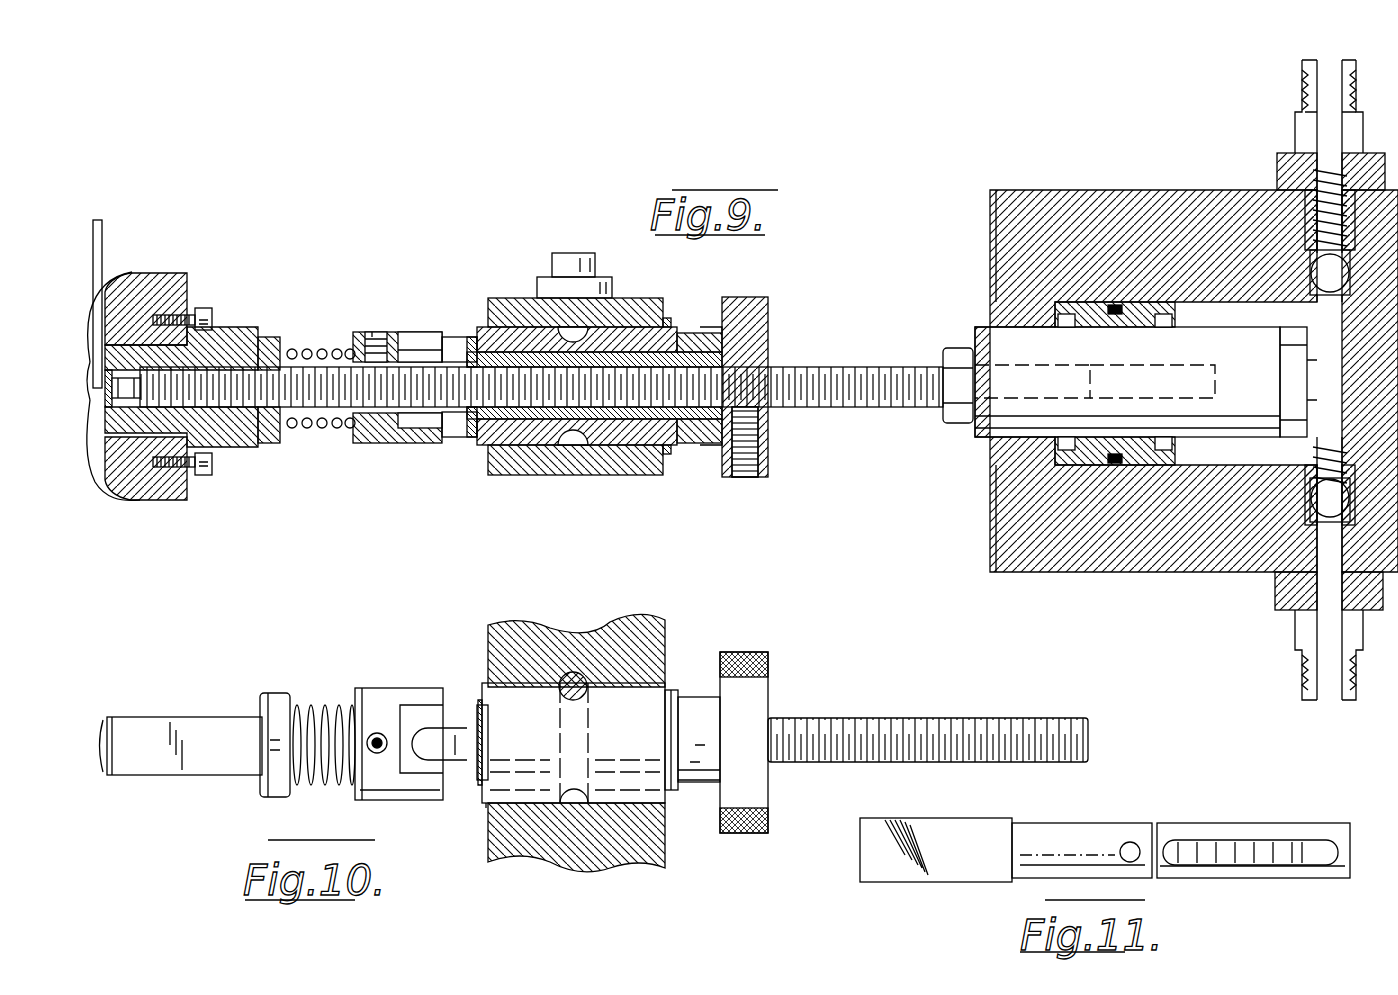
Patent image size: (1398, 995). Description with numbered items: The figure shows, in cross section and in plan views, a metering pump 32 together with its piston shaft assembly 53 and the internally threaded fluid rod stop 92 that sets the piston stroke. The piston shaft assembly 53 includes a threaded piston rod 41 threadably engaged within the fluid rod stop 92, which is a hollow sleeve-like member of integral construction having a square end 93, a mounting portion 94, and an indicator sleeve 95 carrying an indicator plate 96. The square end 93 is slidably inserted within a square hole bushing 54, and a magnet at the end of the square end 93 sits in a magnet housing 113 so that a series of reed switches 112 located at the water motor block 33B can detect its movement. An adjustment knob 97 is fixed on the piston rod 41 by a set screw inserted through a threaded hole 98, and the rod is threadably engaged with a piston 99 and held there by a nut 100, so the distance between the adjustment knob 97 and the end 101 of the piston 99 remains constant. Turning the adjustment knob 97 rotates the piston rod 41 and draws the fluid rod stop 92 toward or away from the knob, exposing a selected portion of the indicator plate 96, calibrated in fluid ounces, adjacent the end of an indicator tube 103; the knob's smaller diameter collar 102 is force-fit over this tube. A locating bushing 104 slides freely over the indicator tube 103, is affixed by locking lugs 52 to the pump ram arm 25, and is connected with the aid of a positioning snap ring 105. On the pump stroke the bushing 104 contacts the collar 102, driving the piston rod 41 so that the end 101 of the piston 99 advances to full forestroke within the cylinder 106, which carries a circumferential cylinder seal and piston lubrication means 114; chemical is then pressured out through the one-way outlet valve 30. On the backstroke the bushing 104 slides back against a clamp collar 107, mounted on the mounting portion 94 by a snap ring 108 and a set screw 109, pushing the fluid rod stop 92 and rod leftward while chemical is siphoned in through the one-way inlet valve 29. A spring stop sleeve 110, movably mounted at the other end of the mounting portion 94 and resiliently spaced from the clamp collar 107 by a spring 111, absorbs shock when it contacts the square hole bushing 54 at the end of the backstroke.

In FIG. 9, the pump ram arm 25 is at (632, 312).
In FIG. 10, the pump ram arm 25 is at (615, 622).
In FIG. 9, the inlet valve 29 is at (1283, 598).
In FIG. 9, the outlet valve 30 is at (1283, 155).
In FIG. 9, the metering pump 32 is at (1175, 566).
In FIG. 9, the water motor block 33B is at (132, 298).
In FIG. 9, the piston rod 41 is at (884, 400).
In FIG. 10, the piston rod 41 is at (975, 722).
In FIG. 9, the locking lugs 52 is at (572, 262).
In FIG. 10, the locking lugs 52 is at (588, 696).
In FIG. 9, the piston shaft assembly 53 is at (419, 385).
In FIG. 10, the piston shaft assembly 53 is at (488, 810).
In FIG. 9, the square hole bushing 54 is at (215, 337).
In FIG. 10, the fluid rod stop 92 is at (294, 735).
In FIG. 11, the fluid rod stop 92 is at (1124, 844).
In FIG. 9, the square end 93 is at (232, 355).
In FIG. 10, the square end 93 is at (200, 722).
In FIG. 11, the square end 93 is at (960, 872).
In FIG. 11, the mounting portion 94 is at (1080, 828).
In FIG. 9, the indicator sleeve 95 is at (458, 412).
In FIG. 10, the indicator sleeve 95 is at (485, 780).
In FIG. 11, the indicator sleeve 95 is at (1347, 830).
In FIG. 9, the indicator plate 96 is at (450, 360).
In FIG. 10, the indicator plate 96 is at (445, 738).
In FIG. 11, the indicator plate 96 is at (1240, 840).
In FIG. 9, the adjustment knob 97 is at (772, 308).
In FIG. 10, the adjustment knob 97 is at (772, 658).
In FIG. 9, the threaded hole 98 is at (745, 478).
In FIG. 9, the piston 99 is at (982, 336).
In FIG. 9, the nut 100 is at (955, 420).
In FIG. 9, the end of piston 101 is at (1283, 370).
In FIG. 9, the smaller diameter collar 102 is at (712, 446).
In FIG. 10, the smaller diameter collar 102 is at (705, 790).
In FIG. 9, the indicator tube 103 is at (694, 352).
In FIG. 10, the indicator tube 103 is at (480, 700).
In FIG. 9, the locating bushing 104 is at (630, 450).
In FIG. 10, the locating bushing 104 is at (540, 700).
In FIG. 9, the positioning snap ring 105 is at (672, 446).
In FIG. 10, the positioning snap ring 105 is at (672, 690).
In FIG. 9, the cylinder 106 is at (1282, 343).
In FIG. 9, the clamp collar 107 is at (390, 446).
In FIG. 10, the clamp collar 107 is at (370, 690).
In FIG. 9, the snap ring 108 is at (412, 428).
In FIG. 10, the snap ring 108 is at (408, 720).
In FIG. 9, the set screw 109 is at (378, 330).
In FIG. 10, the set screw 109 is at (372, 752).
In FIG. 9, the spring stop sleeve 110 is at (275, 447).
In FIG. 10, the spring stop sleeve 110 is at (270, 695).
In FIG. 9, the spring 111 is at (340, 430).
In FIG. 10, the spring 111 is at (316, 705).
In FIG. 9, the reed switches 112 is at (98, 222).
In FIG. 9, the magnet housing 113 is at (100, 480).
In FIG. 10, the magnet housing 113 is at (105, 775).
In FIG. 9, the cylinder seal and piston lubrication means 114 is at (1070, 440).